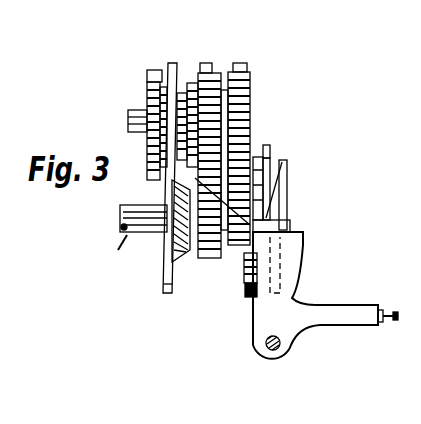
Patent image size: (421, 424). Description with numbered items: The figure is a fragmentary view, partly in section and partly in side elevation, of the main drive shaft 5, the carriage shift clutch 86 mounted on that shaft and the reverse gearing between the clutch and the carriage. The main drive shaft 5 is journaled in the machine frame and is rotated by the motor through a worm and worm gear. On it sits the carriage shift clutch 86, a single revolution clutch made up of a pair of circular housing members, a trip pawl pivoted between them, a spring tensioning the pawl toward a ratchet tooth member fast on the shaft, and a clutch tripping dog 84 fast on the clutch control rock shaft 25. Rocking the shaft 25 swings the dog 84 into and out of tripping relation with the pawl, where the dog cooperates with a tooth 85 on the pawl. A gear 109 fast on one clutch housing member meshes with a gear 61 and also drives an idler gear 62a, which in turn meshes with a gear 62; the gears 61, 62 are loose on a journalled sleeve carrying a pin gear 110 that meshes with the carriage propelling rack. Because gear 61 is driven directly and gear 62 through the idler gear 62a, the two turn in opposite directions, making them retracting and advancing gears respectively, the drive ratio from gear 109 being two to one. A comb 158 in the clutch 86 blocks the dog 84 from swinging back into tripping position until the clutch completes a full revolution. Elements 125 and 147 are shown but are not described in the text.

The main drive shaft 5 is at (145, 221).
The clutch control rock shaft 25 is at (274, 351).
The gear 61 is at (239, 65).
The gear 62 is at (205, 65).
The idler gear 62a is at (207, 247).
The clutch tripping dog 84 is at (287, 338).
The tooth 85 is at (287, 162).
The carriage shift clutch 86 is at (247, 296).
The gear 109 is at (254, 157).
The pin gear 110 is at (152, 72).
The shaft stub 125 is at (132, 112).
The plate 147 is at (167, 291).
The comb 158 is at (268, 146).